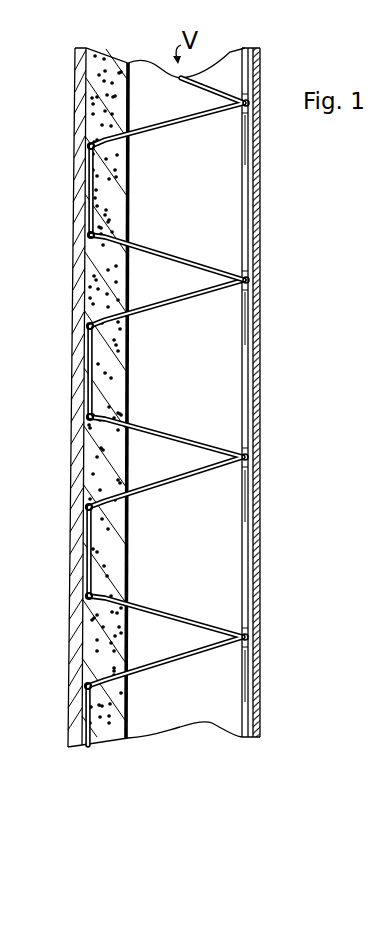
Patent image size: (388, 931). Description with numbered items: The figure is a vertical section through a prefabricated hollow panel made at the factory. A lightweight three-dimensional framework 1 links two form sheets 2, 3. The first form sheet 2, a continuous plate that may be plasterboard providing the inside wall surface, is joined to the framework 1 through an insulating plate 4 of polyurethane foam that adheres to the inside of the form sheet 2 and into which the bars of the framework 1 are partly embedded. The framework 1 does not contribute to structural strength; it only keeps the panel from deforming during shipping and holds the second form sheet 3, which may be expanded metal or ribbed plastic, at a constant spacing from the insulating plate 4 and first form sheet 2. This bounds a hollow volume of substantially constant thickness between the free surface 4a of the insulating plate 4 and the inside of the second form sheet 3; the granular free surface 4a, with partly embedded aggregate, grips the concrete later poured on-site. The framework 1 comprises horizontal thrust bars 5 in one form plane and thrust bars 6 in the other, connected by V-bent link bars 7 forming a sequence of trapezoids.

The three-dimensional framework 1 is at (166, 411).
The first form sheet 2 is at (82, 213).
The second form sheet 3 is at (257, 194).
The insulating plate 4 is at (112, 200).
The free surface of the insulating plate 4a is at (129, 228).
The horizontal thrust bars 5 is at (88, 143).
The horizontal thrust bars 6 is at (256, 278).
The link bars 7 is at (204, 262).